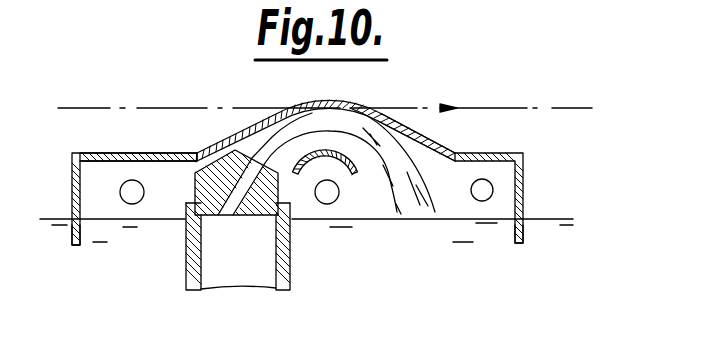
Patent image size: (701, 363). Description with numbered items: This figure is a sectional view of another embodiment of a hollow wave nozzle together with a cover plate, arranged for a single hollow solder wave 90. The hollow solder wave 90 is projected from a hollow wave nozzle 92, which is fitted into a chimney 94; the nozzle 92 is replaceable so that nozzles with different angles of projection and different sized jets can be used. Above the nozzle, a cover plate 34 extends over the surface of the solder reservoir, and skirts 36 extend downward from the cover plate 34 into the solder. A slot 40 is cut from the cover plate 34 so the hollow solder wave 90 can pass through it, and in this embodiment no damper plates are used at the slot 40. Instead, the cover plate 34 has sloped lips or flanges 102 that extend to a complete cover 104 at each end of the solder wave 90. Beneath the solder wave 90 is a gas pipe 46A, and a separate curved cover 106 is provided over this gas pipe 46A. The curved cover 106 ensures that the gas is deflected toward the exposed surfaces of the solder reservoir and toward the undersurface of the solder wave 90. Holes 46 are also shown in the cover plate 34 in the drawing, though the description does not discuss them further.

The cover plate 34 is at (123, 152).
The skirts 36 is at (72, 232).
The slot 40 is at (268, 110).
The mounting hole 46 is at (129, 198).
The gas pipe 46A is at (326, 204).
The hollow solder wave 90 is at (327, 125).
The hollow wave nozzle 92 is at (188, 204).
The chimney 94 is at (287, 273).
The sloped lips or flanges 102 is at (203, 150).
The complete cover 104 is at (357, 102).
The curved cover 106 is at (350, 157).